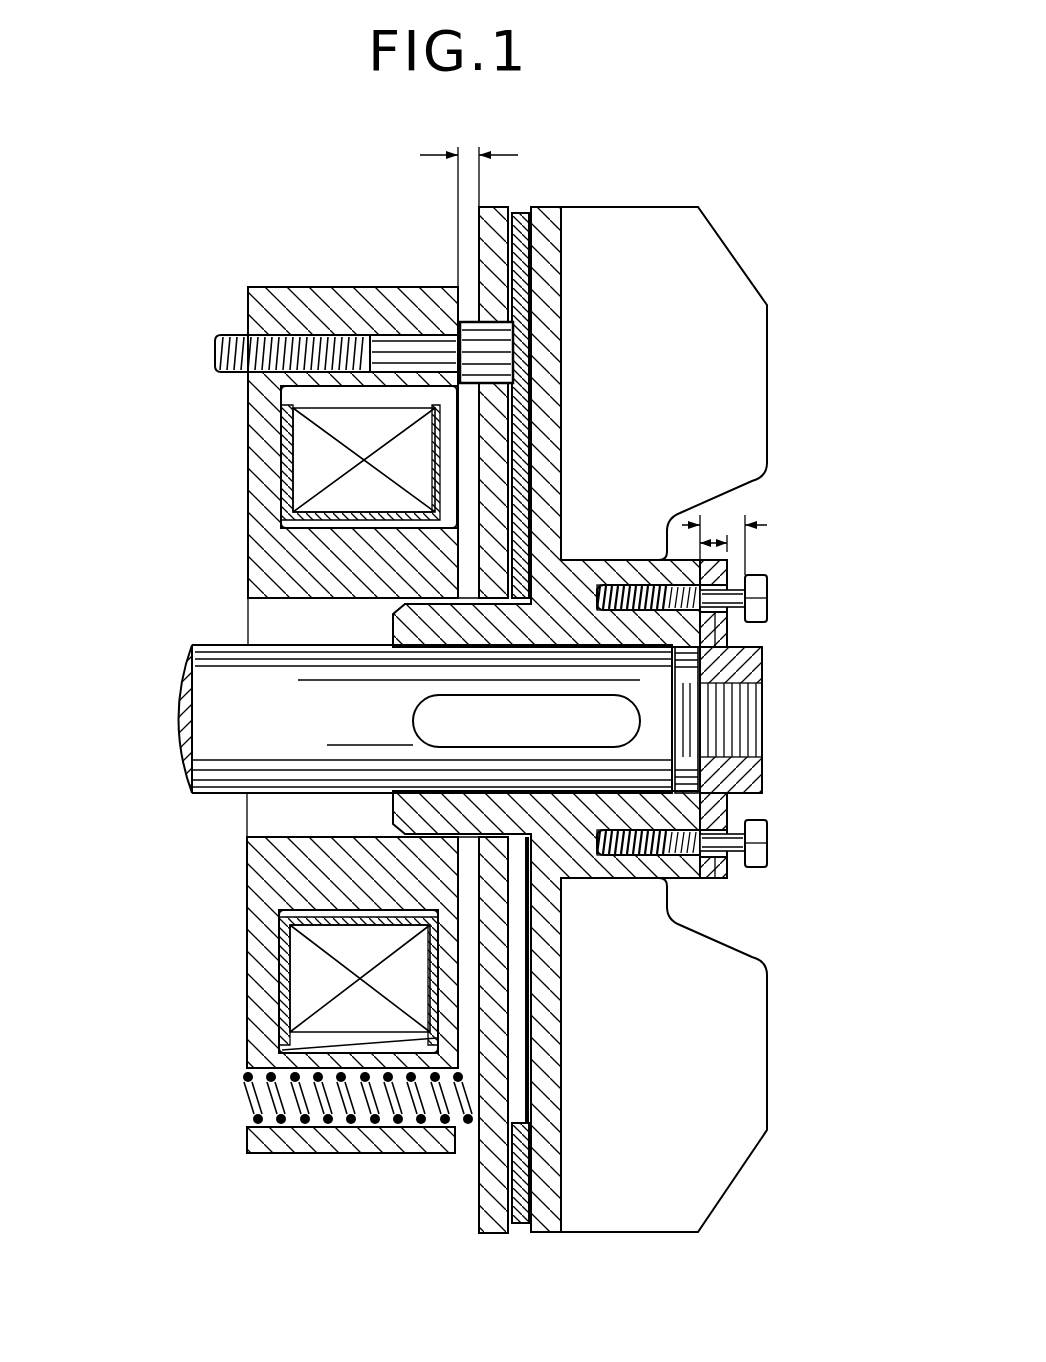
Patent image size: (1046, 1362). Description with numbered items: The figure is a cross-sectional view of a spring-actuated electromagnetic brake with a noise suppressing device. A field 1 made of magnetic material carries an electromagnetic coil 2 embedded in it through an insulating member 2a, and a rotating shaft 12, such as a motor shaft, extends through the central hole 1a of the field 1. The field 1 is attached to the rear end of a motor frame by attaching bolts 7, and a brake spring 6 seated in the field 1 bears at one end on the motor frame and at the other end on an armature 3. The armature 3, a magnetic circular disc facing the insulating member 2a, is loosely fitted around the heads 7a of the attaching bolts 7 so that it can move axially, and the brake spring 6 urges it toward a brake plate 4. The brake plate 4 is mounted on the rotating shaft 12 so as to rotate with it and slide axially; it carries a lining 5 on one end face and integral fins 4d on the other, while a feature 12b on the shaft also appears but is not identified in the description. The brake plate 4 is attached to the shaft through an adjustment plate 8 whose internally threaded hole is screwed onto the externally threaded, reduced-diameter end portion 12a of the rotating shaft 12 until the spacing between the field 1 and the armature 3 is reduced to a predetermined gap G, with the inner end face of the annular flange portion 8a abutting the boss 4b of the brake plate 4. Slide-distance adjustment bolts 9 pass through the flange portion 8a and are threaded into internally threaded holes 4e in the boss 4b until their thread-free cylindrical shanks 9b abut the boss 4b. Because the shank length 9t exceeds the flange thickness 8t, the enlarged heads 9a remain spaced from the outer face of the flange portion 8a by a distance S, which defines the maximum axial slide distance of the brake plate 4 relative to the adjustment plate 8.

The field 1 is at (306, 280).
The central hole 1a is at (264, 832).
The electromagnetic coil 2 is at (316, 452).
The insulating member 2a is at (300, 402).
The armature 3 is at (493, 198).
The brake plate 4 is at (556, 198).
The boss 4b is at (630, 575).
The fins 4d is at (745, 263).
The internally threaded holes 4e is at (610, 584).
The lining 5 is at (527, 203).
The brake spring 6 is at (228, 1105).
The attaching bolts 7 is at (412, 326).
The heads 7a is at (488, 352).
The adjustment plate 8 is at (777, 779).
The annular flange portion 8a is at (717, 878).
The thickness 8t is at (747, 568).
The slide-distance adjustment bolts 9 is at (780, 589).
The enlarged head 9a is at (759, 612).
The thread-free cylindrical shank 9b is at (740, 626).
The length 9t is at (722, 522).
The rotating shaft 12 is at (154, 739).
The externally threaded end portion 12a is at (735, 708).
The keyway 12b is at (428, 722).
The gap G is at (469, 198).
The slide distance S is at (742, 542).